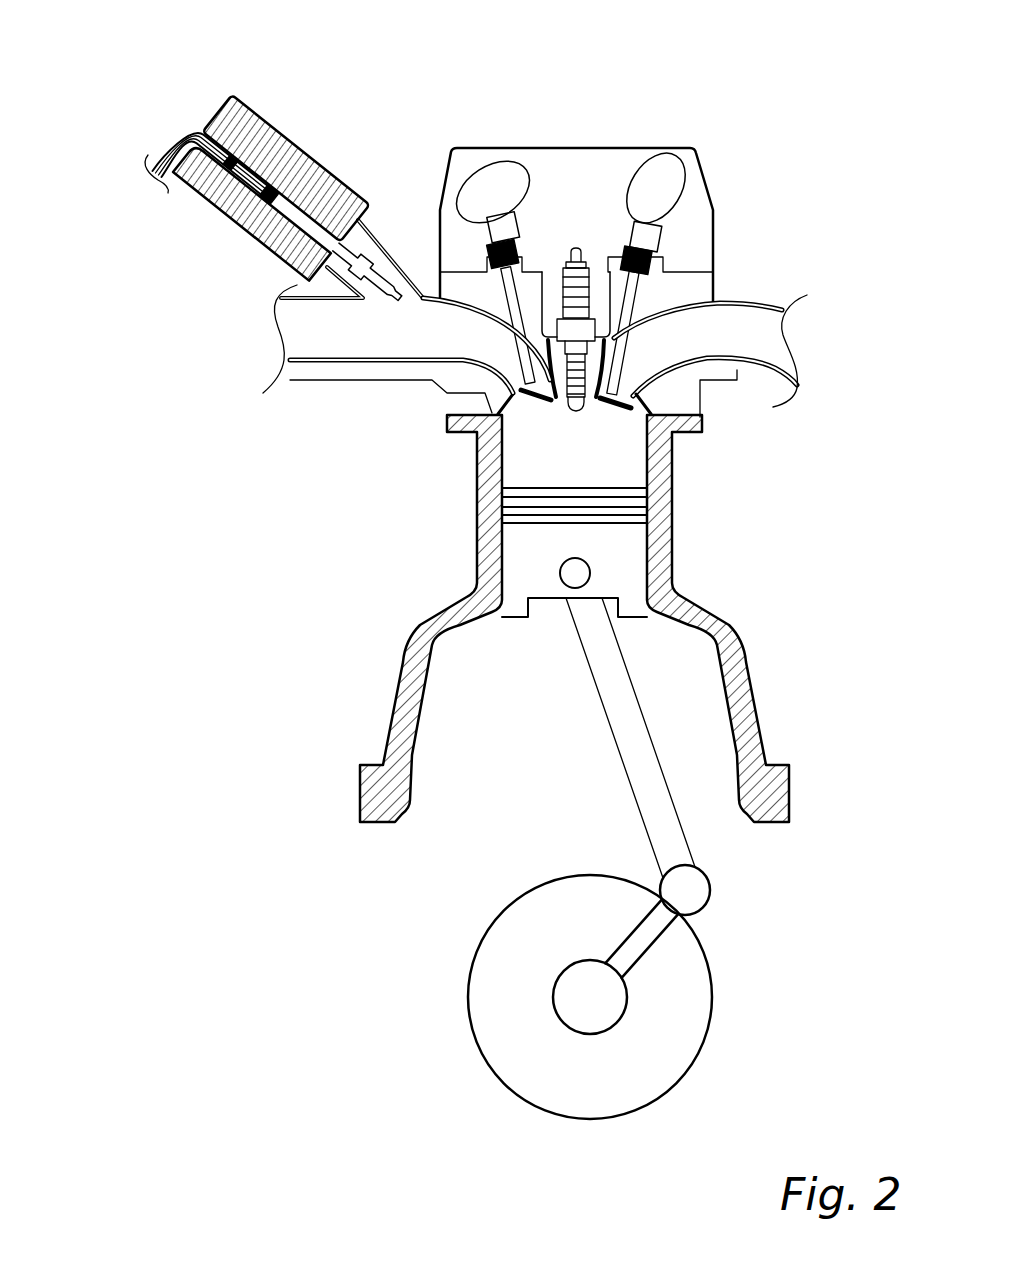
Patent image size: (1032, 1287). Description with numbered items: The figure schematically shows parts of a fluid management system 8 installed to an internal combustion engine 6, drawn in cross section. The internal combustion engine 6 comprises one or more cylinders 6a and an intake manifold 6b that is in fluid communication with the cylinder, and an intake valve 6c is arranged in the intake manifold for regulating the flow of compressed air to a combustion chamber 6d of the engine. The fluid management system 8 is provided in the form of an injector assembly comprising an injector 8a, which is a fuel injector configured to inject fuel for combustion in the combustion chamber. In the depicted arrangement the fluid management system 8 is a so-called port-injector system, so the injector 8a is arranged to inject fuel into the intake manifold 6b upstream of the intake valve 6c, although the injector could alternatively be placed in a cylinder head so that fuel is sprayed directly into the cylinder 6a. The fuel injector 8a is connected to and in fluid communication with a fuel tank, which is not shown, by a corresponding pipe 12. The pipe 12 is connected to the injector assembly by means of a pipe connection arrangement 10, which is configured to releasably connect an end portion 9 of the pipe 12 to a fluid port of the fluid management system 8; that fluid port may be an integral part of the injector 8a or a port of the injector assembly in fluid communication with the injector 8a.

The internal combustion engine 6 is at (755, 108).
The cylinder 6a is at (627, 437).
The intake manifold 6b is at (425, 330).
The intake valve 6c is at (542, 272).
The combustion chamber 6d is at (637, 473).
The fluid management system 8 is at (214, 107).
The injector 8a is at (360, 238).
The end portion 9 is at (298, 147).
The pipe connection arrangement 10 is at (115, 120).
The pipe 12 is at (182, 135).